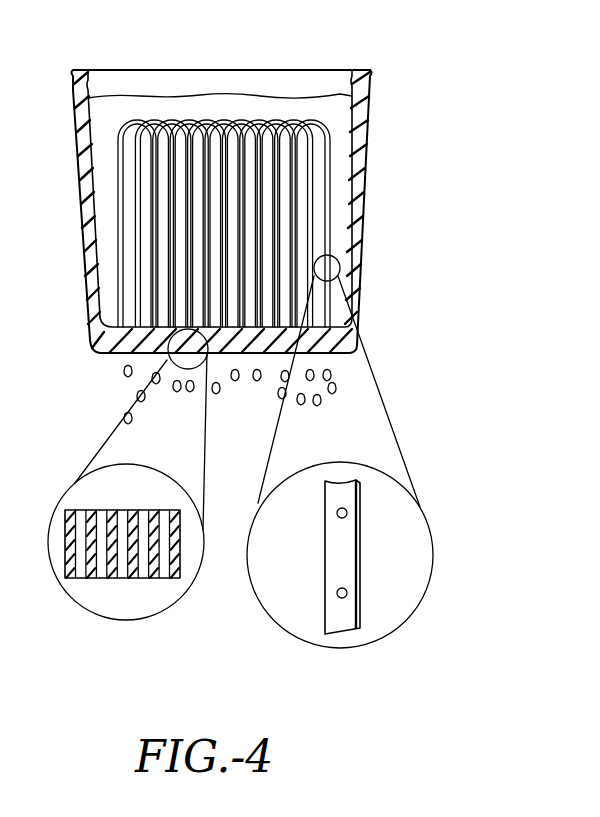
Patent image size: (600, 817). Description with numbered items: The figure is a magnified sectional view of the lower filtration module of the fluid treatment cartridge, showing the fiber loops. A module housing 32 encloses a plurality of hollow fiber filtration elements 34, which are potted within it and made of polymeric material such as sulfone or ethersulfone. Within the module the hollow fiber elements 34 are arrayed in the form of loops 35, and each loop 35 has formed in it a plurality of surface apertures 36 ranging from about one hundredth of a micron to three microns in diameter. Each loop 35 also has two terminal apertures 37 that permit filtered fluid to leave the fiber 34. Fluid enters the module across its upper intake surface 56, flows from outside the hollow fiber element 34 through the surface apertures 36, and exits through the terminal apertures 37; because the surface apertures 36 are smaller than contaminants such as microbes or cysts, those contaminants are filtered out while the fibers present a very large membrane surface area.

The housing 32 is at (368, 208).
The hollow fiber filtration element 34 is at (187, 213).
The loop 35 is at (178, 120).
The surface aperture 36 is at (347, 513).
The terminal aperture 37 is at (105, 578).
The upper intake surface 56 is at (325, 70).